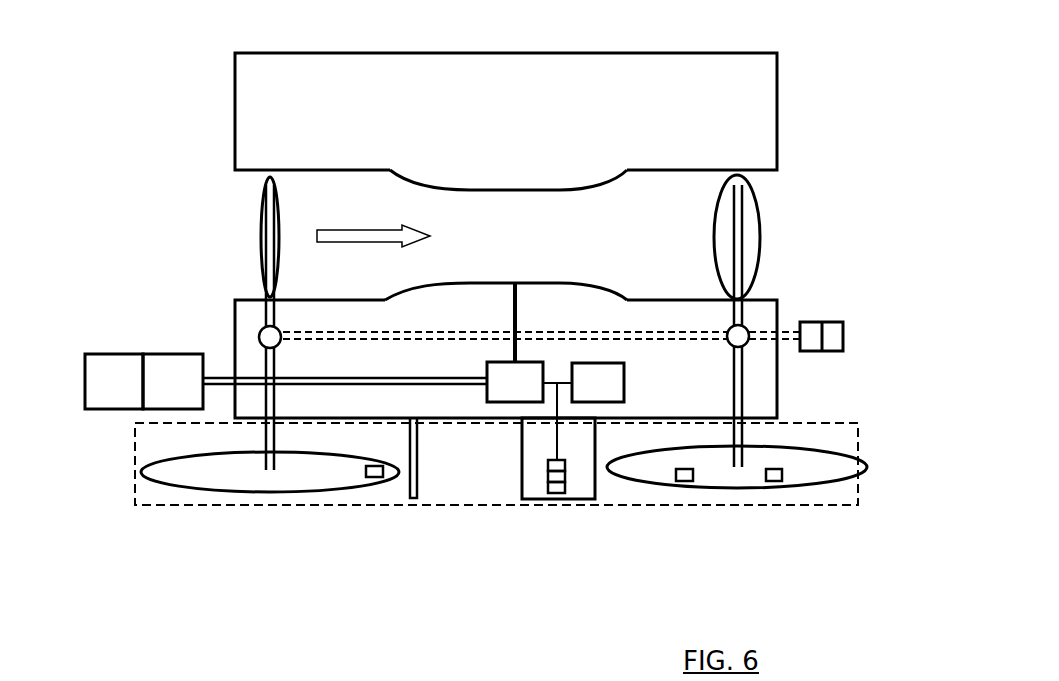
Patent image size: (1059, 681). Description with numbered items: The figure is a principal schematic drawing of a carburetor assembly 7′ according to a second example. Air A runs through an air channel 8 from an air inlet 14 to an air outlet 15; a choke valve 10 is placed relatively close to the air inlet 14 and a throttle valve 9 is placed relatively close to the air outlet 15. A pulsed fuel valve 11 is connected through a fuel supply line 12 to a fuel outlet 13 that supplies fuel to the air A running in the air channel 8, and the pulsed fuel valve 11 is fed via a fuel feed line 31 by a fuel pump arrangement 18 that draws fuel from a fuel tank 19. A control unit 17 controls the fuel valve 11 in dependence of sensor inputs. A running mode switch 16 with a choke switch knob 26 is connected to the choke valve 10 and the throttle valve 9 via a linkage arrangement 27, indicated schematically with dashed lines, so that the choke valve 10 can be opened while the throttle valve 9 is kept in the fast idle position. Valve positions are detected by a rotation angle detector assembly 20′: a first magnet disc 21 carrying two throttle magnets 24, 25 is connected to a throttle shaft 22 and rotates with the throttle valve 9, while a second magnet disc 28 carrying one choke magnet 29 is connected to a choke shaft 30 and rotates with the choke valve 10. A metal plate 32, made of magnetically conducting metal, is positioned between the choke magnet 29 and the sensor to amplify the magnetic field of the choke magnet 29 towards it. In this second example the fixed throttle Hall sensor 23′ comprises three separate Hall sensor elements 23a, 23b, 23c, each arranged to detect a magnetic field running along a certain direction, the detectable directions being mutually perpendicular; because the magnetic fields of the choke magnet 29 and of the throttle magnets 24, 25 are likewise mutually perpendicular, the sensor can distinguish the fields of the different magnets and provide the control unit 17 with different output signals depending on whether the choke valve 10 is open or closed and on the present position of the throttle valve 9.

The carburetor assembly 7′ is at (185, 70).
The air channel 8 is at (645, 212).
The throttle valve 9 is at (726, 230).
The choke valve 10 is at (282, 238).
The pulsed fuel valve 11 is at (502, 394).
The fuel supply line 12 is at (512, 300).
The fuel outlet 13 is at (519, 284).
The air inlet 14 is at (230, 226).
The air outlet 15 is at (779, 223).
The running mode switch 16 is at (821, 311).
The control unit 17 is at (585, 394).
The fuel pump arrangement 18 is at (159, 401).
The fuel tank 19 is at (100, 401).
The rotation angle detector assembly 20′ is at (193, 506).
The first magnet disc 21 is at (822, 465).
The throttle shaft 22 is at (741, 310).
The throttle Hall sensor 23′ is at (583, 478).
The Hall sensor element 23a is at (548, 462).
The Hall sensor element 23b is at (548, 478).
The Hall sensor element 23c is at (565, 485).
The throttle magnet 24 is at (690, 481).
The throttle magnet 25 is at (780, 481).
The choke switch knob 26 is at (832, 352).
The linkage arrangement 27 is at (598, 330).
The second magnet disc 28 is at (325, 475).
The choke magnet 29 is at (373, 478).
The choke shaft 30 is at (268, 363).
The fuel feed line 31 is at (410, 382).
The metal plate 32 is at (422, 485).
The air A is at (372, 228).